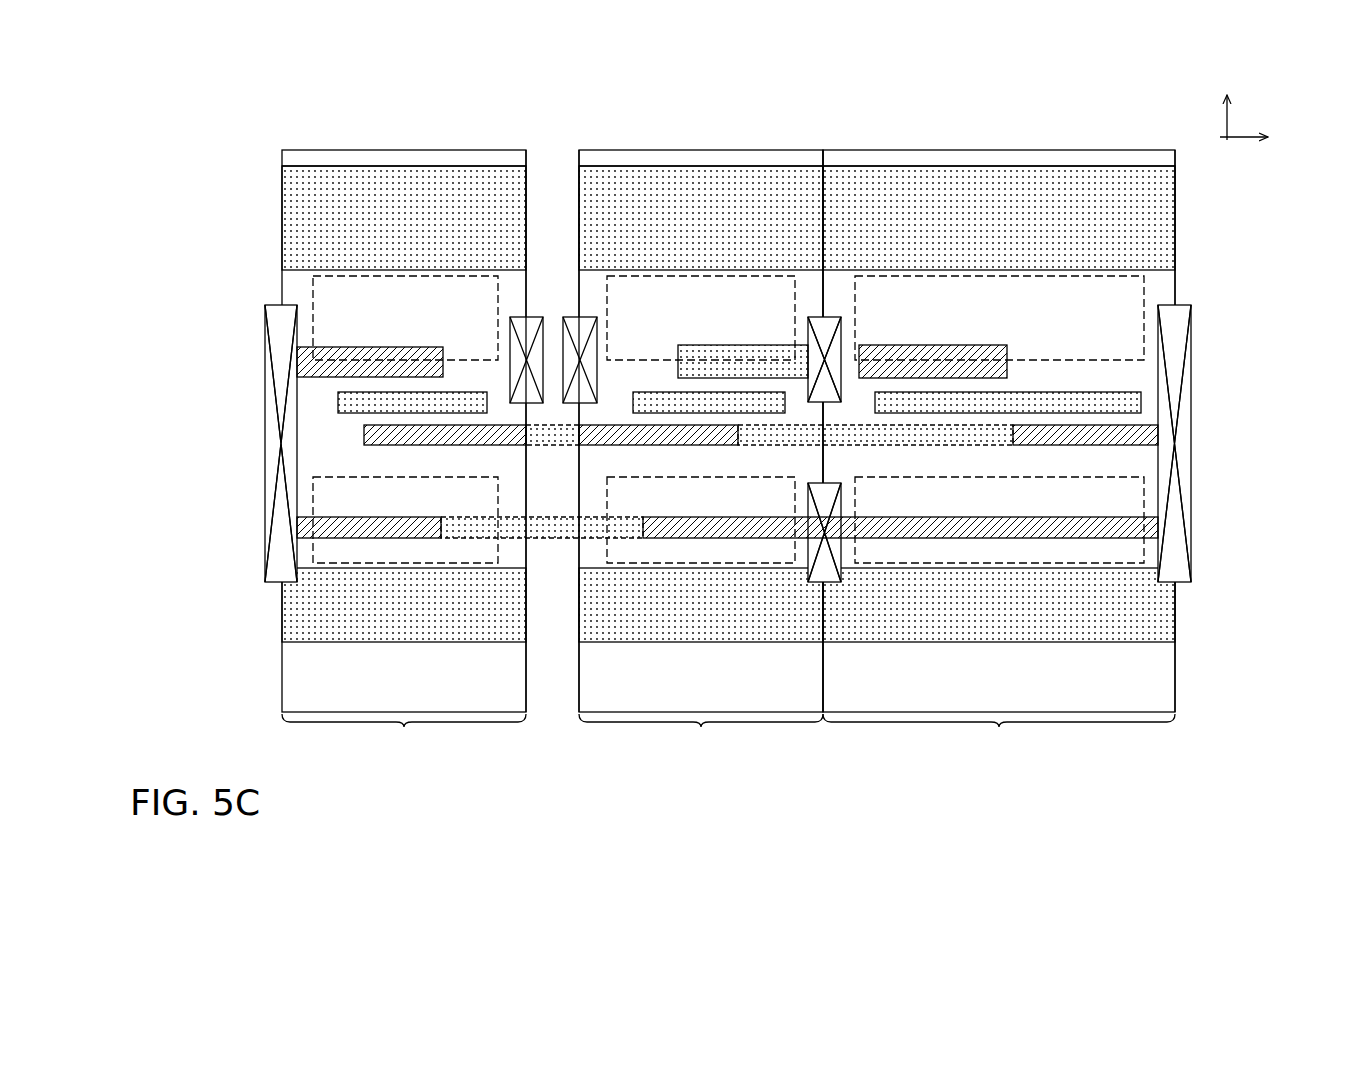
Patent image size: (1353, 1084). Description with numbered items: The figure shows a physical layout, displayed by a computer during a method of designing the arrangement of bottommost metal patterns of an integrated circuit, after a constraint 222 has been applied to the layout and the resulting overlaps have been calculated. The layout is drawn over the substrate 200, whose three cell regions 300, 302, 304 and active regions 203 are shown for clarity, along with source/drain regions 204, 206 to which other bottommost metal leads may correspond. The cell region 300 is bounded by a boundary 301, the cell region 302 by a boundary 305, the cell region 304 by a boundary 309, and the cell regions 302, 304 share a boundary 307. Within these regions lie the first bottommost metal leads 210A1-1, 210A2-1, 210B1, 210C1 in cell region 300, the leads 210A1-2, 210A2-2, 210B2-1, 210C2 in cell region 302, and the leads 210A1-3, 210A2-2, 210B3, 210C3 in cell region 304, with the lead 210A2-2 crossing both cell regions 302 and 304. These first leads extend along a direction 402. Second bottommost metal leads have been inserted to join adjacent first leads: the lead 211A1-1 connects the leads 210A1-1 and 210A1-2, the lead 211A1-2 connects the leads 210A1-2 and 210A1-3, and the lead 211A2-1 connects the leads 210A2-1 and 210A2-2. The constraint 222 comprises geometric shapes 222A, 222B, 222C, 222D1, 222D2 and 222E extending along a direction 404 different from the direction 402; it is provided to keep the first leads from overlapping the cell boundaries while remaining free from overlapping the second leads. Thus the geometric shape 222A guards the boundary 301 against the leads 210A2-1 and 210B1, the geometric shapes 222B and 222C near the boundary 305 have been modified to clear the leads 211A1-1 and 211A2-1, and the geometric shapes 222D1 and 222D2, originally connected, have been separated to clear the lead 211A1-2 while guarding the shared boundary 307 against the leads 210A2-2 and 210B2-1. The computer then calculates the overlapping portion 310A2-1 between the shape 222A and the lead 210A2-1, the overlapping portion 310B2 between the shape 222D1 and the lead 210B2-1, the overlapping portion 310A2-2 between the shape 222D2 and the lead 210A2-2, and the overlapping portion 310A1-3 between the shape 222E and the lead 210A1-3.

The substrate 200 is at (1153, 674).
The active regions 203 is at (448, 324).
The source/drain region 204 is at (412, 224).
The source/drain region 206 is at (412, 621).
The constraint 222 is at (184, 45).
The geometric shape 222A is at (264, 357).
The geometric shape 222B is at (517, 317).
The geometric shape 222C is at (580, 317).
The geometric shape 222D1 is at (846, 324).
The geometric shape 222D2 is at (822, 583).
The geometric shape 222E is at (1193, 354).
The first bottommost metal lead 210B1 is at (368, 347).
The first bottommost metal lead 210B2-1 is at (753, 345).
The first bottommost metal lead 210B3 is at (980, 345).
The first bottommost metal lead 210C1 is at (338, 400).
The first bottommost metal lead 210C2 is at (652, 392).
The first bottommost metal lead 210C3 is at (1085, 392).
The first bottommost metal lead 210A1-1 is at (364, 433).
The first bottommost metal lead 210A1-2 is at (688, 445).
The first bottommost metal lead 210A1-3 is at (1107, 447).
The first bottommost metal lead 210A2-1 is at (350, 538).
The first bottommost metal lead 210A2-2 is at (1022, 538).
The second bottommost metal lead 211A1-1 is at (557, 447).
The second bottommost metal lead 211A1-2 is at (972, 447).
The second bottommost metal lead 211A2-1 is at (557, 540).
The overlapping portion 310B2 is at (828, 356).
The overlapping portion 310A1-3 is at (1177, 429).
The overlapping portion 310A2-1 is at (280, 526).
The overlapping portion 310A2-2 is at (818, 543).
The boundary 301 is at (535, 277).
The boundary 305 is at (573, 277).
The boundary 307 is at (827, 277).
The boundary 309 is at (1177, 215).
The cell region 300 is at (404, 736).
The cell region 302 is at (701, 736).
The cell region 304 is at (999, 737).
The direction 402 is at (1226, 96).
The direction 404 is at (1272, 135).